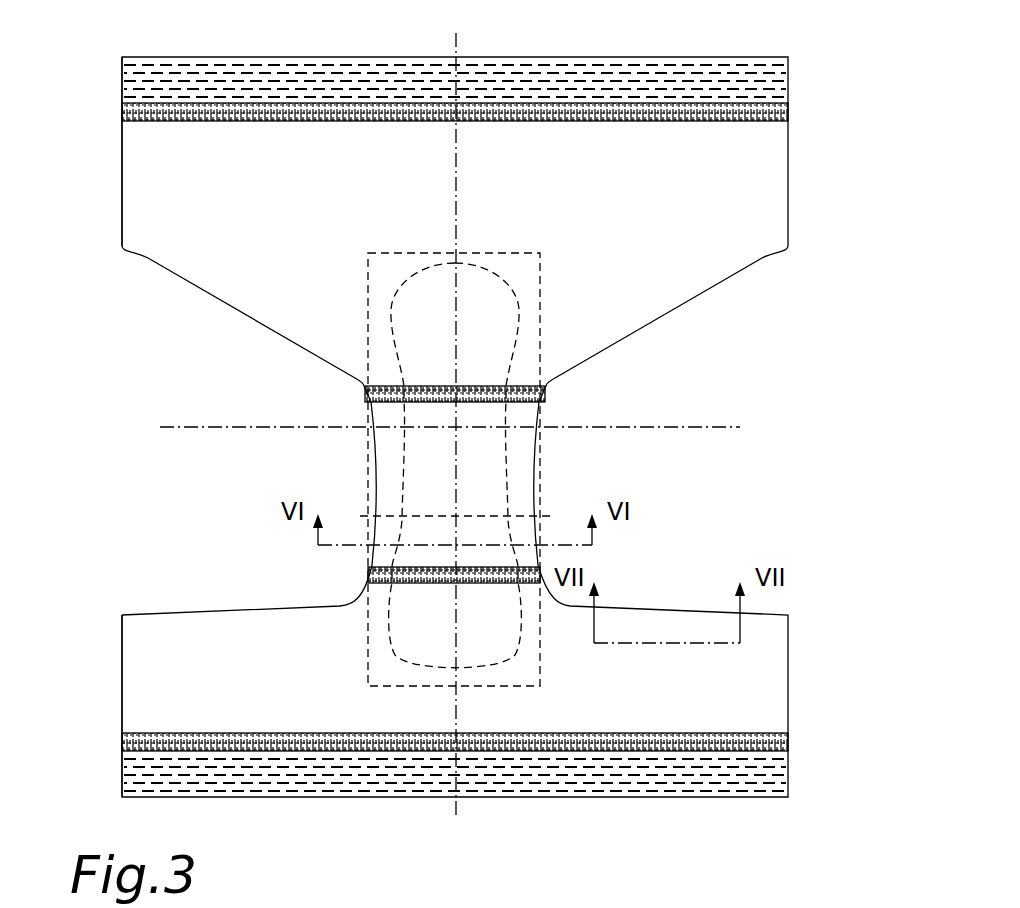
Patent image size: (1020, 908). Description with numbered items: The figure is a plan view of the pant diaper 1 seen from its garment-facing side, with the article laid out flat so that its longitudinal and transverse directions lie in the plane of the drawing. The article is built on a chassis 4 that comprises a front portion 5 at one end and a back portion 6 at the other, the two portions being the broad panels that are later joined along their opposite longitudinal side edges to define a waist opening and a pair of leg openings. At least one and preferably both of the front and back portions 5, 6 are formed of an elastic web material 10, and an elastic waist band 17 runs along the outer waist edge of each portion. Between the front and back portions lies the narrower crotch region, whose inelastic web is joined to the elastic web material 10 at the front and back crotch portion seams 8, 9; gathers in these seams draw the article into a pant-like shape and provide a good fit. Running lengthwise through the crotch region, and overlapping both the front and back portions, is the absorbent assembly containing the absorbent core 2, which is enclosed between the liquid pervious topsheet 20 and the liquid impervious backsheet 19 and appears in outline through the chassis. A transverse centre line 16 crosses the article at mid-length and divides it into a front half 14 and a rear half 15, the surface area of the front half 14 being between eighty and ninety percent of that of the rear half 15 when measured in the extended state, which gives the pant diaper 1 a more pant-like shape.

The pant diaper 1 is at (845, 42).
The absorbent core 2 is at (512, 469).
The chassis 4 is at (118, 192).
The front portion 5 is at (268, 679).
The back portion 6 is at (320, 216).
The front crotch portion seam 8 is at (372, 562).
The back crotch portion seam 9 is at (368, 399).
The elastic web material 10 is at (455, 431).
The front half 14 is at (492, 711).
The rear half 15 is at (480, 168).
The transverse centre line 16 is at (736, 428).
The elastic waist band 17 is at (743, 80).
The backsheet 19 is at (512, 469).
The topsheet 20 is at (477, 468).